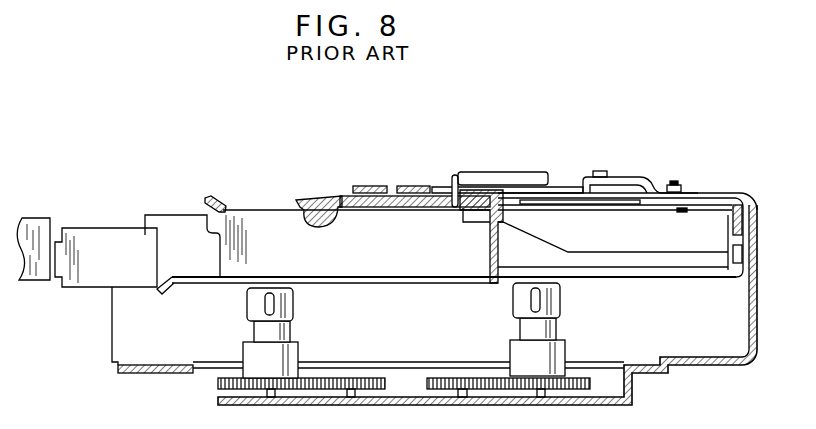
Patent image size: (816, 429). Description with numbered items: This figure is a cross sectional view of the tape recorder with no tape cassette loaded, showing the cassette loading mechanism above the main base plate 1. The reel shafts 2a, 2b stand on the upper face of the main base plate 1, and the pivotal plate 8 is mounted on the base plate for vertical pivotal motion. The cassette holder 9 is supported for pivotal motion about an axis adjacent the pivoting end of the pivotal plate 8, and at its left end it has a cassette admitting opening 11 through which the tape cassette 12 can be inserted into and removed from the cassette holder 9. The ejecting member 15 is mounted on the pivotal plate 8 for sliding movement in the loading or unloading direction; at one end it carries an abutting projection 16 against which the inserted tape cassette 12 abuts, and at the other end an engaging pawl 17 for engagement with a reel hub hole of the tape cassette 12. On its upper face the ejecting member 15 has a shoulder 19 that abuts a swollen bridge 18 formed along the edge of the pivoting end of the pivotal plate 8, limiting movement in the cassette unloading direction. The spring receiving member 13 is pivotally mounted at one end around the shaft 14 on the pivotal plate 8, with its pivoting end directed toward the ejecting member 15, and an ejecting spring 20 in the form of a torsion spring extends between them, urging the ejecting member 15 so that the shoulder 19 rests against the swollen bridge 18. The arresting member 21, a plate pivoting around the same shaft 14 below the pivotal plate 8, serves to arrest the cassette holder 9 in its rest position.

The main base plate 1 is at (707, 370).
The reel shaft 2a is at (293, 303).
The reel shaft 2b is at (562, 300).
The pivotal plate 8 is at (758, 210).
The cassette holder 9 is at (746, 257).
The cassette admitting opening 11 is at (177, 232).
The tape cassette 12 is at (35, 230).
The spring receiving member 13 is at (628, 177).
The shaft 14 is at (676, 184).
The ejecting member 15 is at (395, 208).
The abutting projection 16 is at (489, 252).
The engaging pawl 17 is at (316, 223).
The swollen bridge 18 is at (410, 184).
The shoulder 19 is at (438, 185).
The ejecting spring 20 is at (505, 172).
The arresting member 21 is at (650, 214).